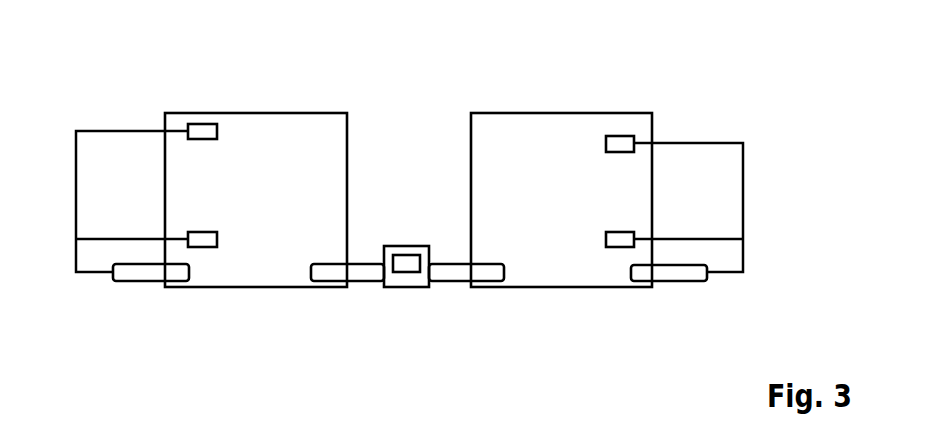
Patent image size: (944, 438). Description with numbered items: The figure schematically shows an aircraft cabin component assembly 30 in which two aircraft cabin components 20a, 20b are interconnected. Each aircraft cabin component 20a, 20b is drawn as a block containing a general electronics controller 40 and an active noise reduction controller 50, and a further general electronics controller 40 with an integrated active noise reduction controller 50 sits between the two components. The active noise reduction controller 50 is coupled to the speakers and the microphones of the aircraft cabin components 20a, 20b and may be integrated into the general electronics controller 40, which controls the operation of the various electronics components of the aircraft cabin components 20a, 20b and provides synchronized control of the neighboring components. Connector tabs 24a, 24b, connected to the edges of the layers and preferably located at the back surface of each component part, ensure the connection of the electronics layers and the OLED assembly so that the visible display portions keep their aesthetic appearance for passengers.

The aircraft cabin component assembly 30 is at (455, 92).
The aircraft cabin component 20a is at (347, 148).
The aircraft cabin component 20b is at (653, 123).
The general electronics controller 40 is at (202, 124).
The active noise reduction controller 50 is at (202, 232).
The connector tab 24a is at (159, 282).
The connector tab 24b is at (455, 283).